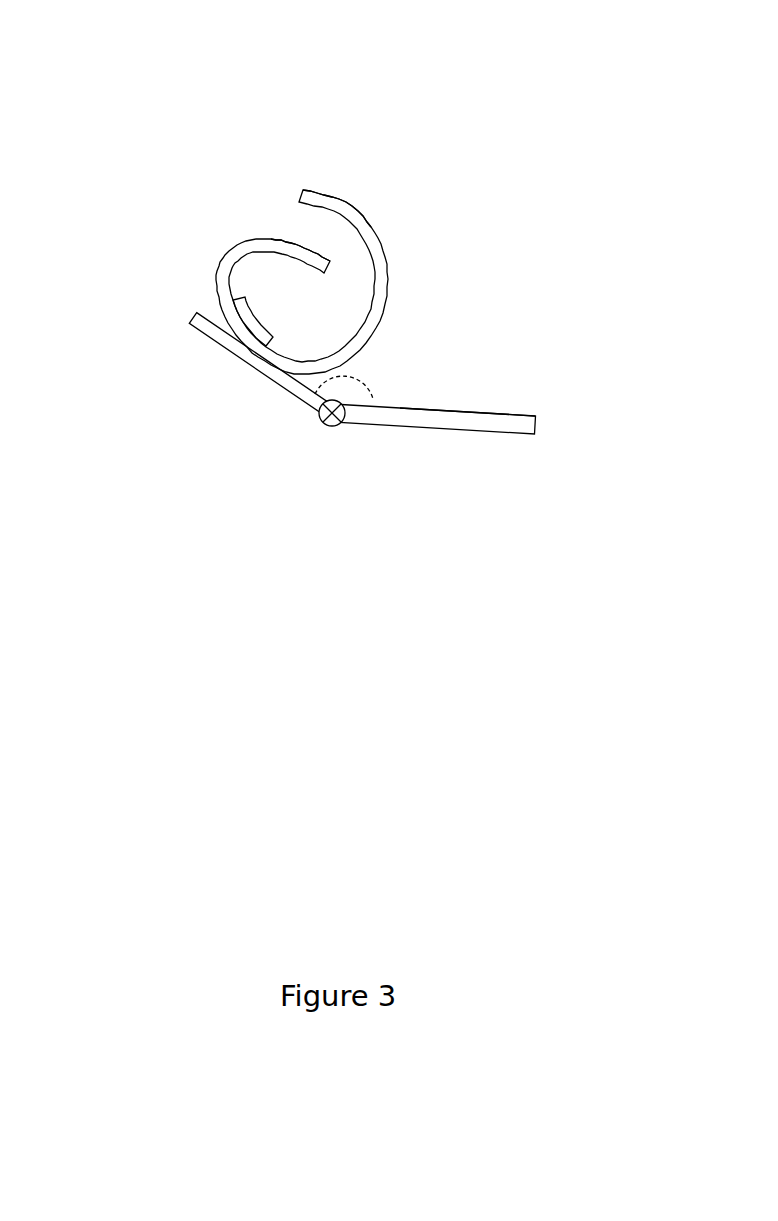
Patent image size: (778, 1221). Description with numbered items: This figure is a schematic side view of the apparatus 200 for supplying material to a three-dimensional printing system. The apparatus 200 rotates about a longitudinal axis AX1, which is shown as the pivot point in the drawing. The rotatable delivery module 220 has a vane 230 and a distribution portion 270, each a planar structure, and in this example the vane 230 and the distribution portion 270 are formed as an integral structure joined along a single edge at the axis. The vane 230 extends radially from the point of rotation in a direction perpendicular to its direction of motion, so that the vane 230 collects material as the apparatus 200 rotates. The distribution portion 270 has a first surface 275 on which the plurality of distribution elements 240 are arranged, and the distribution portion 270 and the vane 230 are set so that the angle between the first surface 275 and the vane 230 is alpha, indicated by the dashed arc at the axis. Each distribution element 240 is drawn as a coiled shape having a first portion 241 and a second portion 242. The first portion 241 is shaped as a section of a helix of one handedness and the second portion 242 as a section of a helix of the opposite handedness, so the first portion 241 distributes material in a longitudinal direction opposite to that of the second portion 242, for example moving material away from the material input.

The apparatus 200 is at (49, 80).
The rotatable delivery module 220 is at (535, 422).
The vane 230 is at (477, 413).
The distribution elements 240 is at (382, 316).
The first portion 241 is at (364, 214).
The second portion 242 is at (243, 242).
The distribution portion 270 is at (260, 372).
The first surface 275 is at (210, 315).
The longitudinal axis AX1 is at (331, 426).